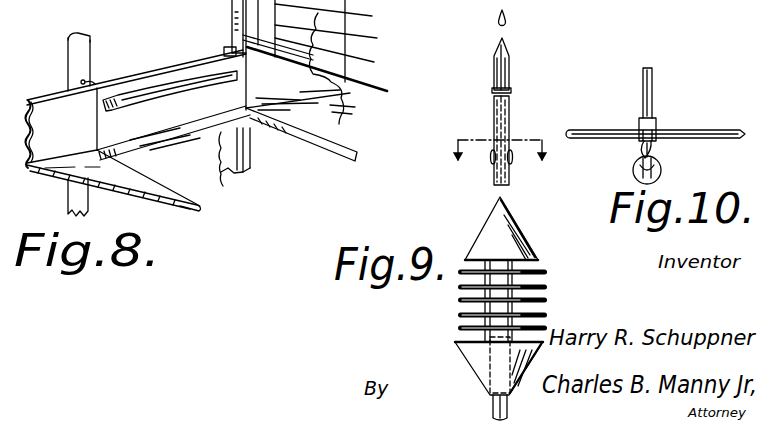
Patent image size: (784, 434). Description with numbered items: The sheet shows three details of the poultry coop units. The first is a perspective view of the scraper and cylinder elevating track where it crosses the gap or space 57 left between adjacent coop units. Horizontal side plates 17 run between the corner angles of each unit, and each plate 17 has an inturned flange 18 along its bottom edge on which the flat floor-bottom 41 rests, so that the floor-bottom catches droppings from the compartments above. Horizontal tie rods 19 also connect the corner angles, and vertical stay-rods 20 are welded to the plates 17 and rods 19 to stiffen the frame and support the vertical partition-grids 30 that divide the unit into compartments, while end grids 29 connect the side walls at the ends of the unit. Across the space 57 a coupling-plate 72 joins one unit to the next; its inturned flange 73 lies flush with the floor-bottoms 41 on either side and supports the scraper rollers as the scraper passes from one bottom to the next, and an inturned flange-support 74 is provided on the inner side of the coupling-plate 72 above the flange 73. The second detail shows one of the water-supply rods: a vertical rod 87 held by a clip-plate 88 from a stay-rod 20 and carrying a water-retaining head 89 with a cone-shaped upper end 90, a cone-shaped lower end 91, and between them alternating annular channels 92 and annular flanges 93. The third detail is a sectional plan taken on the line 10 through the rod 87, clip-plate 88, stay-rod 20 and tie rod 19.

In FIG. 8, the horizontal side plate 17 is at (191, 84).
In FIG. 8, the inturned flange 18 is at (33, 176).
In FIG. 8, the horizontal tie rod 19 is at (232, 25).
In FIG. 10, the horizontal tie rod 19 is at (703, 128).
In FIG. 10, the stay-rod 20 is at (656, 143).
In FIG. 8, the end grid 29 is at (378, 85).
In FIG. 10, the vertical partition-grid 30 is at (648, 88).
In FIG. 8, the floor-bottom 41 is at (340, 133).
In FIG. 8, the gap or space 57 is at (170, 70).
In FIG. 8, the coupling-plate 72 is at (122, 84).
In FIG. 8, the inturned flange 73 is at (223, 174).
In FIG. 8, the inturned flange-support 74 is at (174, 93).
In FIG. 9, the vertical rod 87 is at (509, 78).
In FIG. 10, the vertical rod 87 is at (637, 173).
In FIG. 9, the clip-plate 88 is at (494, 157).
In FIG. 10, the clip-plate 88 is at (640, 152).
In FIG. 9, the water-retaining head 89 is at (528, 243).
In FIG. 9, the cone-shaped upper end 90 is at (500, 222).
In FIG. 9, the cone-shaped lower end 91 is at (468, 353).
In FIG. 9, the annular channel 92 is at (538, 263).
In FIG. 9, the annular flange 93 is at (460, 299).
In FIG. 9, the section line 10 is at (497, 165).